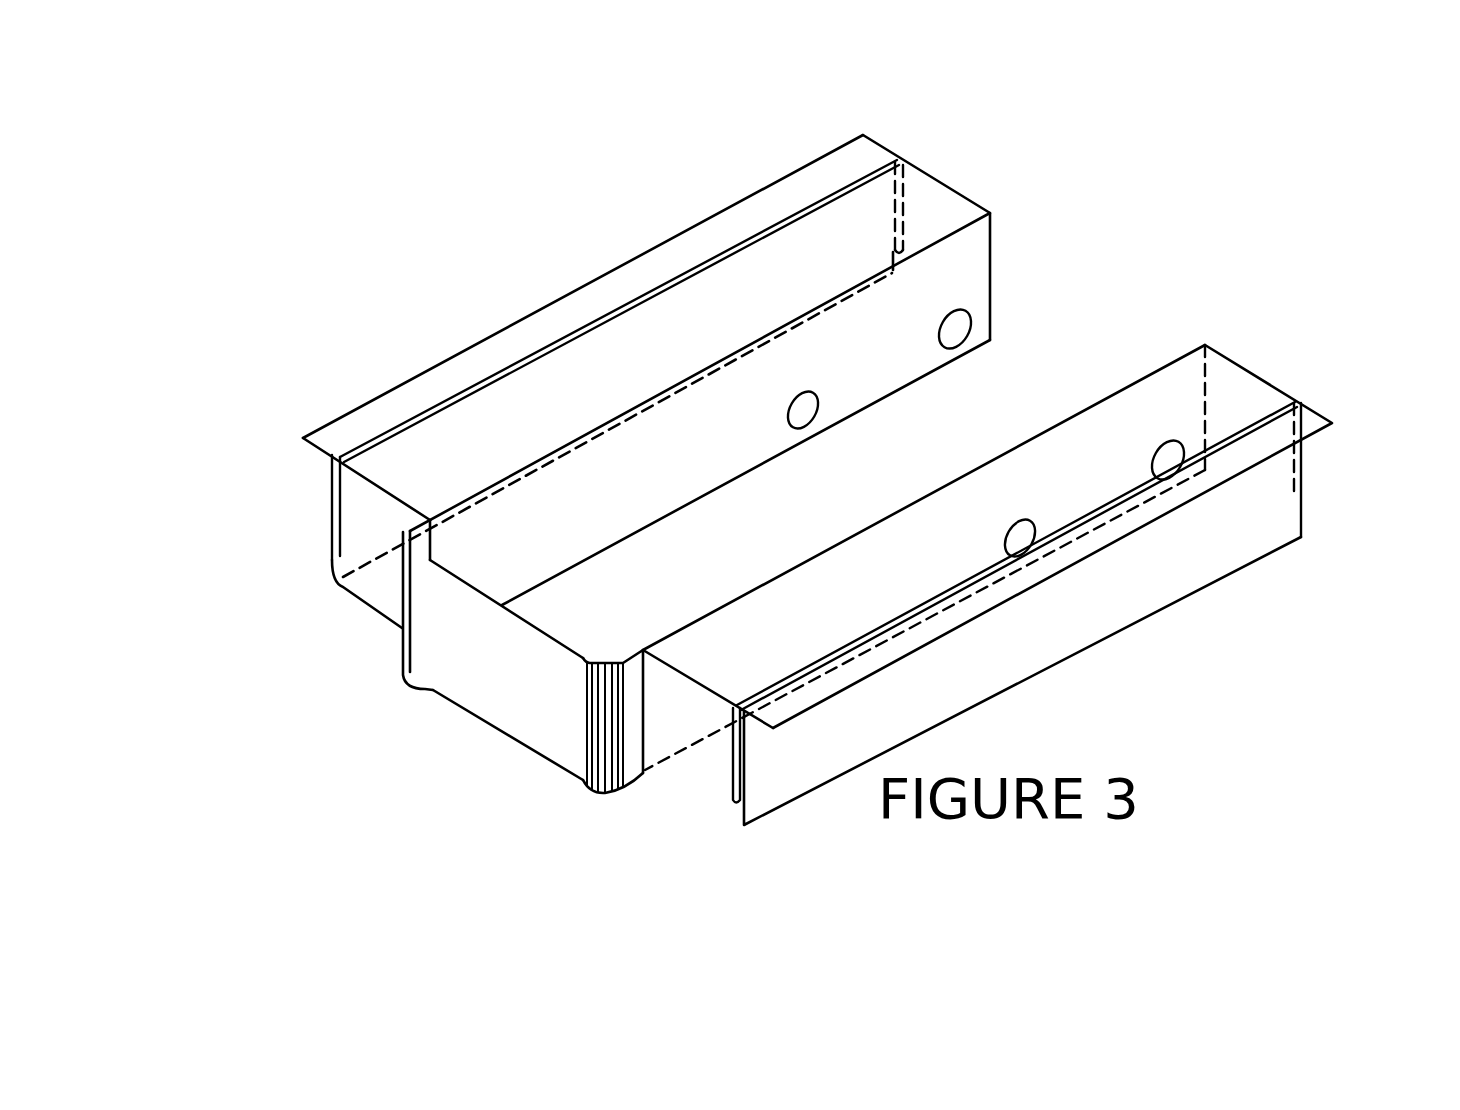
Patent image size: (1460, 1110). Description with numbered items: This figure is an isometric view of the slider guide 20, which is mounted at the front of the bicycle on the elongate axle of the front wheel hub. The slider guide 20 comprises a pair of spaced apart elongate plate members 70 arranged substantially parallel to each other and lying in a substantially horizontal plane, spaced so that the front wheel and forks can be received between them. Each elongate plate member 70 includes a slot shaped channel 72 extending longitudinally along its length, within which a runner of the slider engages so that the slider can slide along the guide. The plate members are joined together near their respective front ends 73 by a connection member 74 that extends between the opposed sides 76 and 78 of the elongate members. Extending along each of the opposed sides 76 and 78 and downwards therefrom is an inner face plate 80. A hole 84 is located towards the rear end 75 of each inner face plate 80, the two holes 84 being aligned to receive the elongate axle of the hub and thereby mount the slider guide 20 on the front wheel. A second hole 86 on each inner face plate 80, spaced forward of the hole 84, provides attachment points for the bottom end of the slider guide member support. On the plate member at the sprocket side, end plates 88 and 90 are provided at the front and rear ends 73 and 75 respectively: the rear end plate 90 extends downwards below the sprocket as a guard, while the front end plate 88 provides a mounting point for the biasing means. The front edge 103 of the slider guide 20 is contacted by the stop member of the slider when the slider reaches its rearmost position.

The slider guide 20 is at (1192, 657).
The elongate plate member 70 is at (727, 226).
The slot shaped channel 72 is at (528, 357).
The front end 73 is at (408, 477).
The connection member 74 is at (493, 683).
The rear end 75 is at (917, 188).
The opposed side 76 is at (533, 452).
The opposed side 78 is at (700, 613).
The inner face plate 80 is at (753, 475).
The hole 84 is at (960, 335).
The second hole 86 is at (1018, 530).
The front end plate 88 is at (377, 572).
The rear end plate 90 is at (978, 200).
The front edge 103 is at (337, 530).